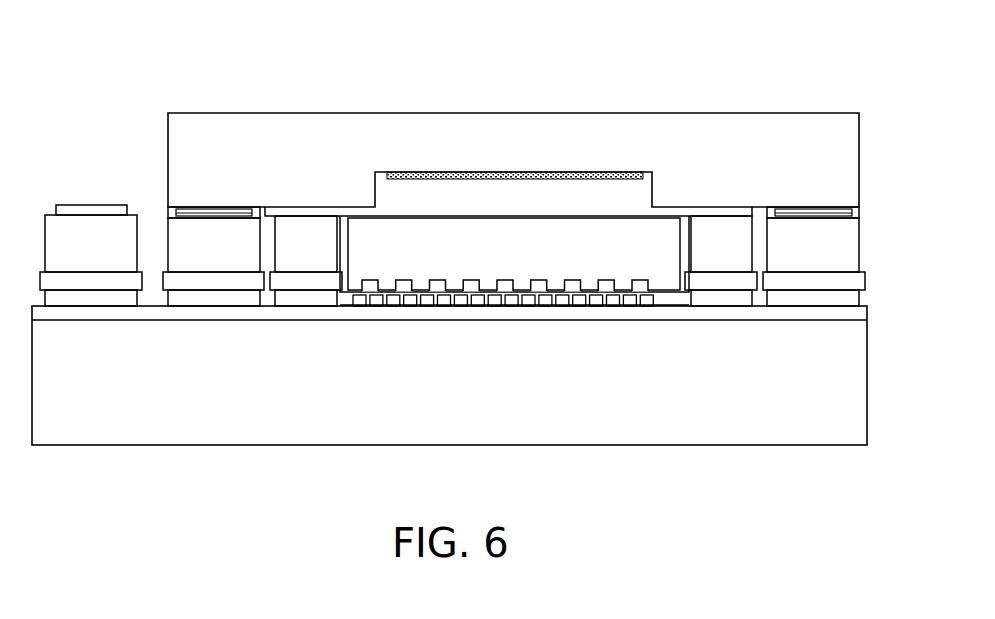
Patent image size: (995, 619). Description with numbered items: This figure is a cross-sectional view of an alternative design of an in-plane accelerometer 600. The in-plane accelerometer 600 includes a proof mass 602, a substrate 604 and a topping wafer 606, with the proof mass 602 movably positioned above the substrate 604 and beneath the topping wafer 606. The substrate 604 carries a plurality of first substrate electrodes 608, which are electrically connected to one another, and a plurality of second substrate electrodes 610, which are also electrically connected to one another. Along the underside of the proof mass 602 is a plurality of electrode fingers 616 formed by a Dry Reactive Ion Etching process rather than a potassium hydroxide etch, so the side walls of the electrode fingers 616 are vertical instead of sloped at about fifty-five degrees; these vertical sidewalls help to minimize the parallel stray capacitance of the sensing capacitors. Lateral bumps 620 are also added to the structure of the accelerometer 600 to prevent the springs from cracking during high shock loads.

The in-plane accelerometer 600 is at (178, 78).
The proof mass 602 is at (555, 232).
The substrate 604 is at (618, 417).
The topping wafer 606 is at (338, 127).
The first substrate electrodes 608 is at (358, 305).
The second substrate electrodes 610 is at (378, 305).
The electrode fingers 616 is at (367, 285).
The lateral bumps 620 is at (333, 280).